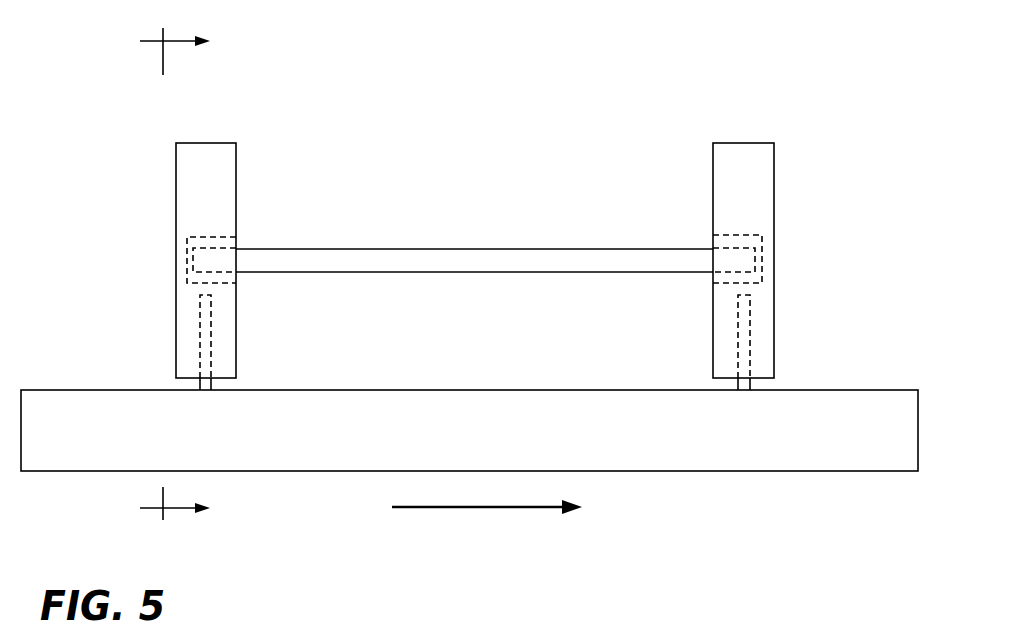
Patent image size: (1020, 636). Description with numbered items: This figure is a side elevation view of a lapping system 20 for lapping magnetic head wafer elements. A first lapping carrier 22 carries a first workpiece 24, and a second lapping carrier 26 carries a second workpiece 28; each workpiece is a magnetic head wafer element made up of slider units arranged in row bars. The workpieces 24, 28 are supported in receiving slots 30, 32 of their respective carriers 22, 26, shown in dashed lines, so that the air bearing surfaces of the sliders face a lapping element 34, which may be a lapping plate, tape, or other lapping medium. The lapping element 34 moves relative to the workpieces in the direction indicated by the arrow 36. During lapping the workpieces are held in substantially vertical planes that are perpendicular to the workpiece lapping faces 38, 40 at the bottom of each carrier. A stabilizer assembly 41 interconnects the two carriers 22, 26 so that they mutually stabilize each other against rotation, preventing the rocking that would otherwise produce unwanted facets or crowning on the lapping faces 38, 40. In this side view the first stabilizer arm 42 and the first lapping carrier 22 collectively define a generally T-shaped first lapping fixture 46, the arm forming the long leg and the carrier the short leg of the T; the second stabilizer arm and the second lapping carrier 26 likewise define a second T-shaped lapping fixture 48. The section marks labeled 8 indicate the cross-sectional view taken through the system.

The section line 8- 8 is at (175, 278).
The lapping system 20 is at (114, 101).
The first lapping carrier 22 is at (176, 189).
The first workpiece 24 is at (203, 356).
The second lapping carrier 26 is at (774, 200).
The second workpiece 28 is at (745, 356).
The receiving slot 30 is at (199, 306).
The receiving slot 32 is at (748, 300).
The lapping element 34 is at (888, 390).
The arrow 36 is at (484, 508).
The workpiece lapping face 38 is at (207, 391).
The workpiece lapping face 40 is at (740, 391).
The stabilizer assembly 41 is at (380, 228).
The first stabilizer arm 42 is at (474, 231).
The first lapping fixture 46 is at (299, 126).
The second lapping fixture 48 is at (686, 126).